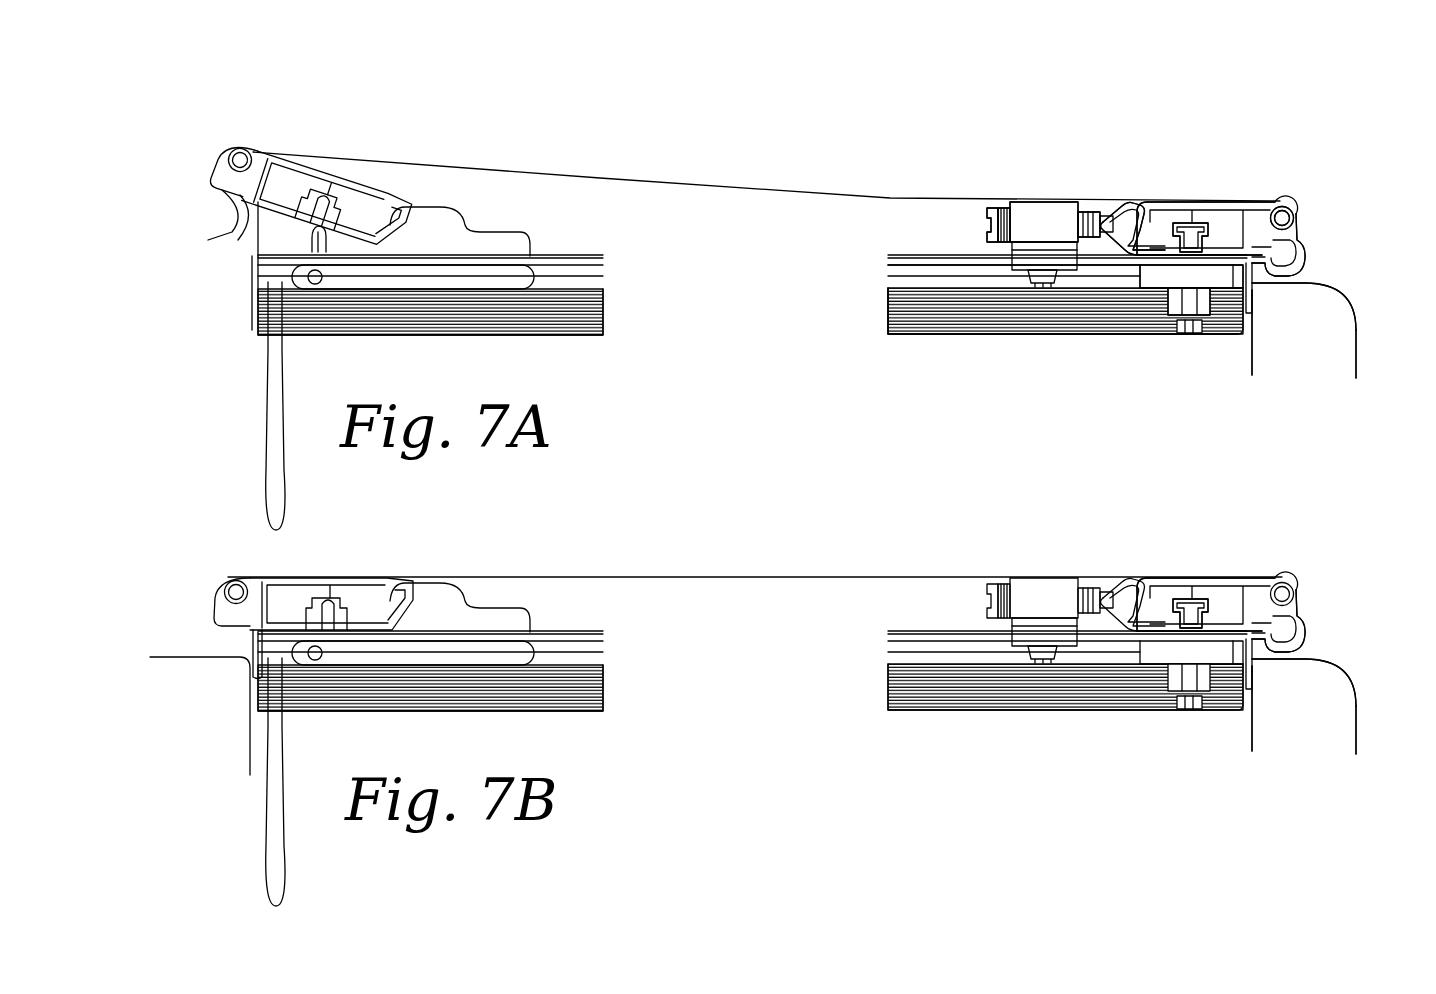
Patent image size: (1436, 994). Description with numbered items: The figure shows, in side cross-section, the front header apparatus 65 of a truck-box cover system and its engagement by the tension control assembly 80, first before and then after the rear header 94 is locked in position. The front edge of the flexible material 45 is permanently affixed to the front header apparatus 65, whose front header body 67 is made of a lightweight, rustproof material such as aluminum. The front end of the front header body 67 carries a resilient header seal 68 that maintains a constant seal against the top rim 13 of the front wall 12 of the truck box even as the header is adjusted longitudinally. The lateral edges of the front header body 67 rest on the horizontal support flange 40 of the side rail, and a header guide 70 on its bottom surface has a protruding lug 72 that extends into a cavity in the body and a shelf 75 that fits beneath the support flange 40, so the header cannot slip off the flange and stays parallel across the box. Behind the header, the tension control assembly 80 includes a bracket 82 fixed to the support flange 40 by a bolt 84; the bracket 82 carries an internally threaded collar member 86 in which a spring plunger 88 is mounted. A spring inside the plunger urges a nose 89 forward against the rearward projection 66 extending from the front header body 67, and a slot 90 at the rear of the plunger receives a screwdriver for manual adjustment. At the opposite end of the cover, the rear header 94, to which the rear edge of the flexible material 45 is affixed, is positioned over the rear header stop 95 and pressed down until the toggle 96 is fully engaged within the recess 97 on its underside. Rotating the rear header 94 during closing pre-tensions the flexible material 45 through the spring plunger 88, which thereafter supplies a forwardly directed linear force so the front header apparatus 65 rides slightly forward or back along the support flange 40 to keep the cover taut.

In FIG. 7A, the front wall 12 is at (1312, 377).
In FIG. 7B, the front wall 12 is at (753, 716).
In FIG. 7A, the top rim 13 is at (1292, 284).
In FIG. 7B, the top rim 13 is at (1327, 663).
In FIG. 7A, the horizontal support flange 40 is at (900, 256).
In FIG. 7B, the horizontal support flange 40 is at (1122, 663).
In FIG. 7A, the flexible material 45 is at (616, 178).
In FIG. 7B, the flexible material 45 is at (745, 578).
In FIG. 7A, the front header apparatus 65 is at (1218, 163).
In FIG. 7B, the front header apparatus 65 is at (1186, 549).
In FIG. 7A, the rearward projection 66 is at (1108, 225).
In FIG. 7A, the front header body 67 is at (1190, 232).
In FIG. 7B, the front header body 67 is at (1214, 548).
In FIG. 7A, the header seal 68 is at (1290, 274).
In FIG. 7B, the header seal 68 is at (1327, 612).
In FIG. 7A, the header guide 70 is at (1150, 278).
In FIG. 7A, the protruding lug 72 is at (1278, 204).
In FIG. 7A, the shelf 75 is at (1183, 268).
In FIG. 7A, the tension control assembly 80 is at (1010, 165).
In FIG. 7A, the bracket 82 is at (1010, 250).
In FIG. 7A, the bolt 84 is at (1030, 278).
In FIG. 7A, the internally threaded collar member 86 is at (1045, 222).
In FIG. 7A, the spring plunger 88 is at (994, 210).
In FIG. 7A, the nose 89 is at (1100, 222).
In FIG. 7A, the slot 90 is at (988, 218).
In FIG. 7A, the rear header 94 is at (287, 160).
In FIG. 7A, the rear header stop 95 is at (512, 225).
In FIG. 7A, the toggle 96 is at (312, 237).
In FIG. 7A, the recess 97 is at (318, 208).